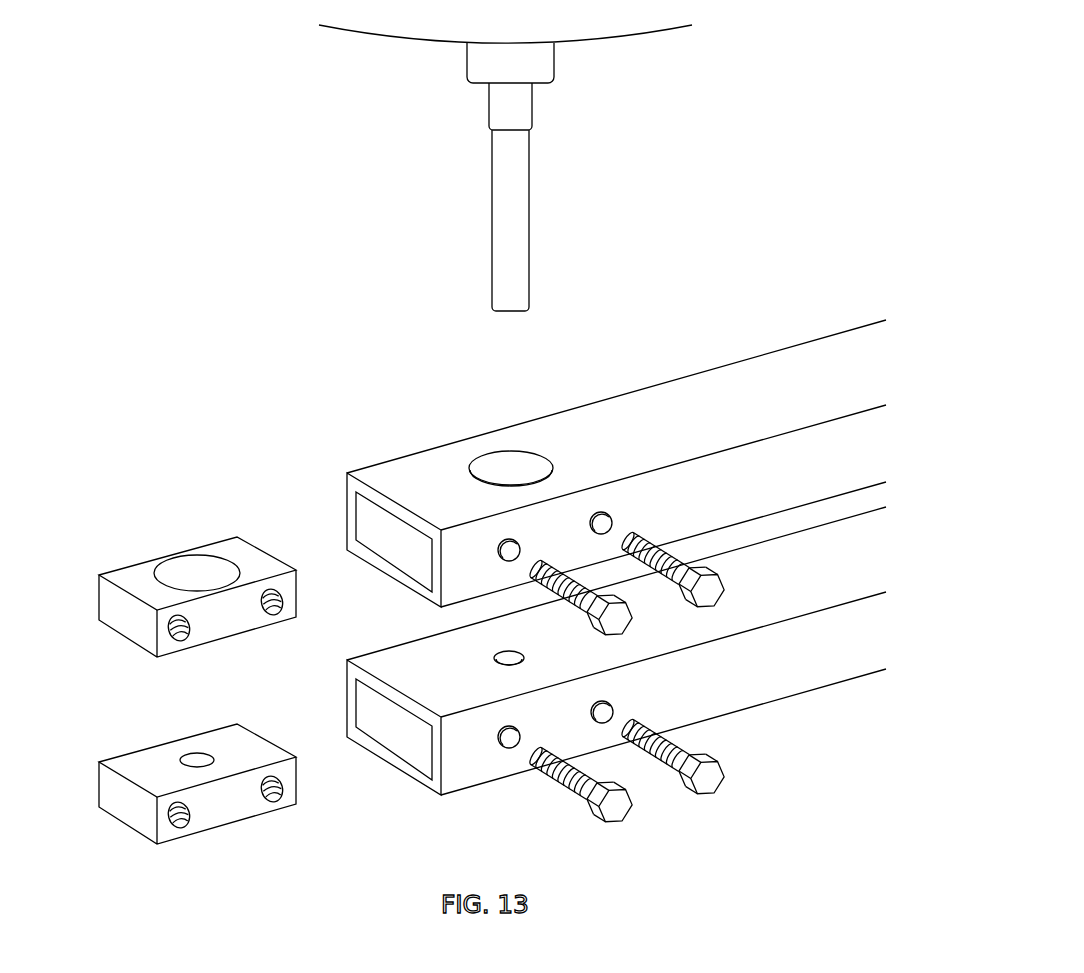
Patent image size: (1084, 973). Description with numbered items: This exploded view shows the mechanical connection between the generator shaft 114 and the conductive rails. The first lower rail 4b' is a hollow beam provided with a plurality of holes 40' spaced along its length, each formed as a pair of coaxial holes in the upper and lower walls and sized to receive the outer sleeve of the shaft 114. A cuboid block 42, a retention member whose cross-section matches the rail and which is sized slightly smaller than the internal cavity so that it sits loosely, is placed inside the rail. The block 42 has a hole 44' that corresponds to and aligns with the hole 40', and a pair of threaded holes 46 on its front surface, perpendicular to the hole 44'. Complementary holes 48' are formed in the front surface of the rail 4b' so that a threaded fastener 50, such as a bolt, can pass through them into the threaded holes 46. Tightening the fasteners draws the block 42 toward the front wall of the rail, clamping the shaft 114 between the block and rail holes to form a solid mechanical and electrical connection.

The shaft 114 is at (456, 142).
The first lower rail 4b′ is at (853, 443).
The holes 40′ is at (508, 475).
The block 42 is at (138, 575).
The holes 44′ is at (198, 567).
The threaded holes 46 is at (192, 623).
The holes 48′ is at (600, 522).
The threaded fastener 50 is at (613, 803).